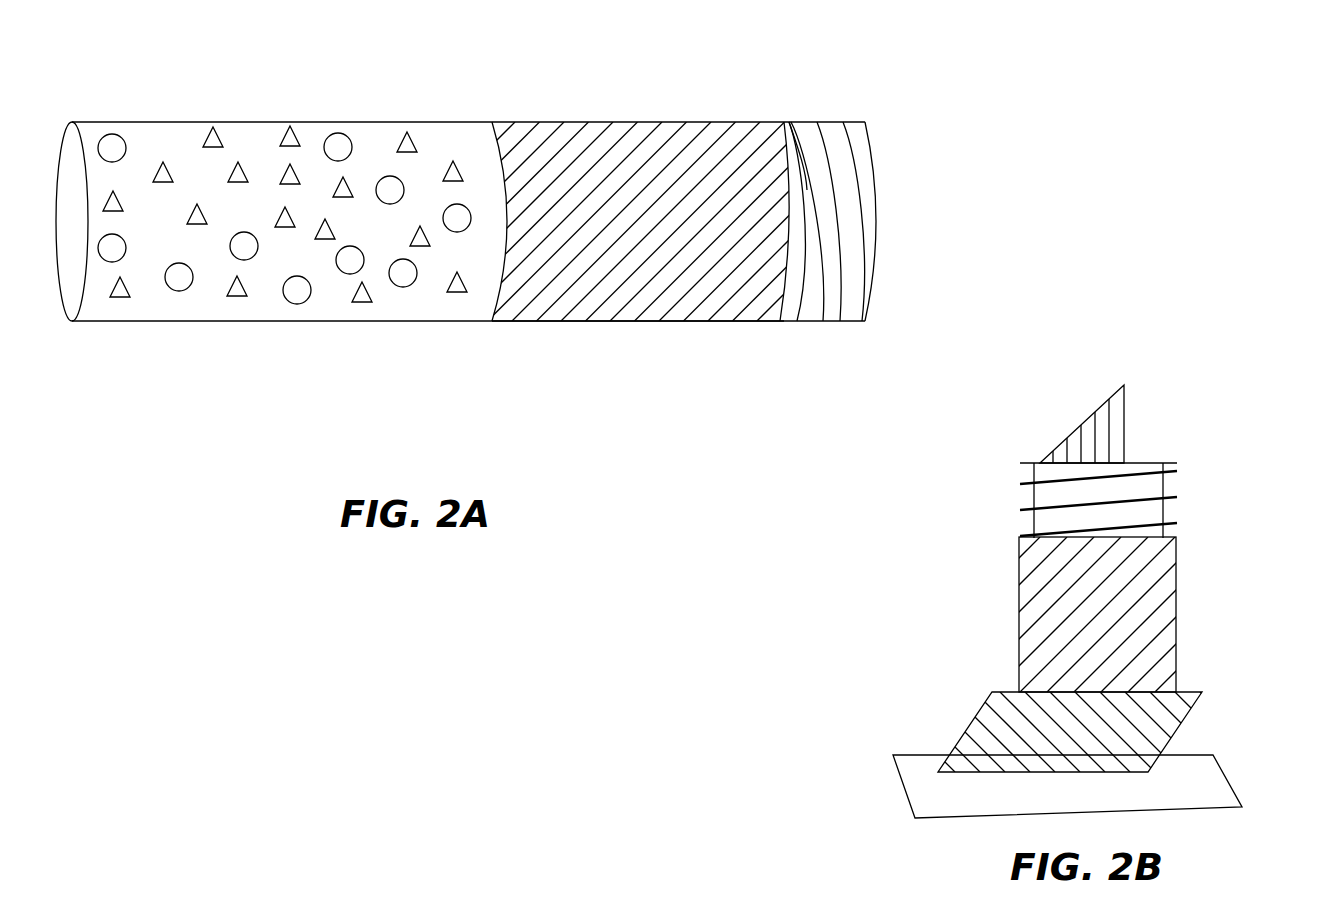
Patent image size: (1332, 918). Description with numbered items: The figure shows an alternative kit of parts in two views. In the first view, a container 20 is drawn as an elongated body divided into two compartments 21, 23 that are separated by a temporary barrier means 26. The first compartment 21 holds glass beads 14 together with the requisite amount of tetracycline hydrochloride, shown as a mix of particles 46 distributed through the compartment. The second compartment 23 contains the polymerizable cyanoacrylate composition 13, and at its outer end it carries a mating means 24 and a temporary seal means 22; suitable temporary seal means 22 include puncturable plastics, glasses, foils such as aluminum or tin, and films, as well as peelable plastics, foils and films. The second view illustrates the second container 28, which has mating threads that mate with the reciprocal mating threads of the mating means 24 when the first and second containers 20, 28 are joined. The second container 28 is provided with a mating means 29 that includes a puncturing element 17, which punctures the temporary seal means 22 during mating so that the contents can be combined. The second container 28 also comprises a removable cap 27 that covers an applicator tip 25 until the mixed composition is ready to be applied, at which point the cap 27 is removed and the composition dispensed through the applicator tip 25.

In FIG. 2A, the container 20 is at (518, 218).
In FIG. 2A, the compartment 21 is at (263, 213).
In FIG. 2A, the flavor particles 46 is at (214, 128).
In FIG. 2A, the glass beads 14 is at (403, 287).
In FIG. 2A, the compartment 23 is at (653, 122).
In FIG. 2A, the temporary seal means 22 is at (784, 132).
In FIG. 2A, the mating means 24 is at (852, 122).
In FIG. 2A, the temporary barrier means 26 is at (491, 321).
In FIG. 2A, the polymerizable cyanoacrylate composition 13 is at (628, 322).
In FIG. 2B, the puncturing element 17 is at (1085, 418).
In FIG. 2B, the mating means 29 is at (1017, 497).
In FIG. 2B, the second container 28 is at (1193, 623).
In FIG. 2B, the applicator tip 25 is at (1188, 723).
In FIG. 2B, the removable cap 27 is at (900, 786).